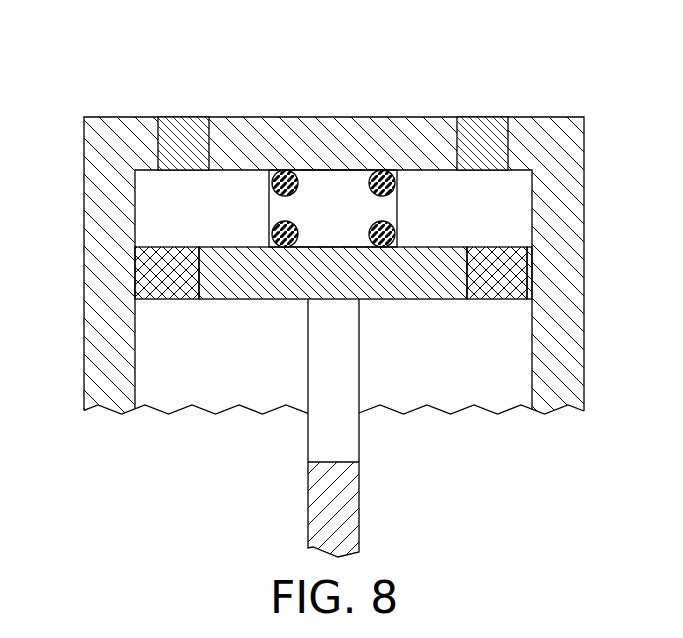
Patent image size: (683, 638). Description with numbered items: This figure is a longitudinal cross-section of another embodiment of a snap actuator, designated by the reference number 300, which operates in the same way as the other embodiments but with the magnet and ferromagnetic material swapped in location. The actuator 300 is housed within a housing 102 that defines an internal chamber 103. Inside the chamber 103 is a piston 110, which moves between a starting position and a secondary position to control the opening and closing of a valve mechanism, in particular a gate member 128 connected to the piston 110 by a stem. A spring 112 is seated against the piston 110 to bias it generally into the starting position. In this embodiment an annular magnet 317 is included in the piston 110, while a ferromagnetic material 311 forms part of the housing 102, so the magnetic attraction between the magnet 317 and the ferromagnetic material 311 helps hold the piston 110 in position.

The actuator 300 is at (342, 285).
The housing 102 is at (305, 221).
The chamber 103 is at (142, 206).
The ferromagnetic material 311 is at (333, 99).
The spring 112 is at (387, 208).
The piston 110 is at (354, 321).
The annular magnet 317 is at (331, 293).
The gate member 128 is at (386, 428).